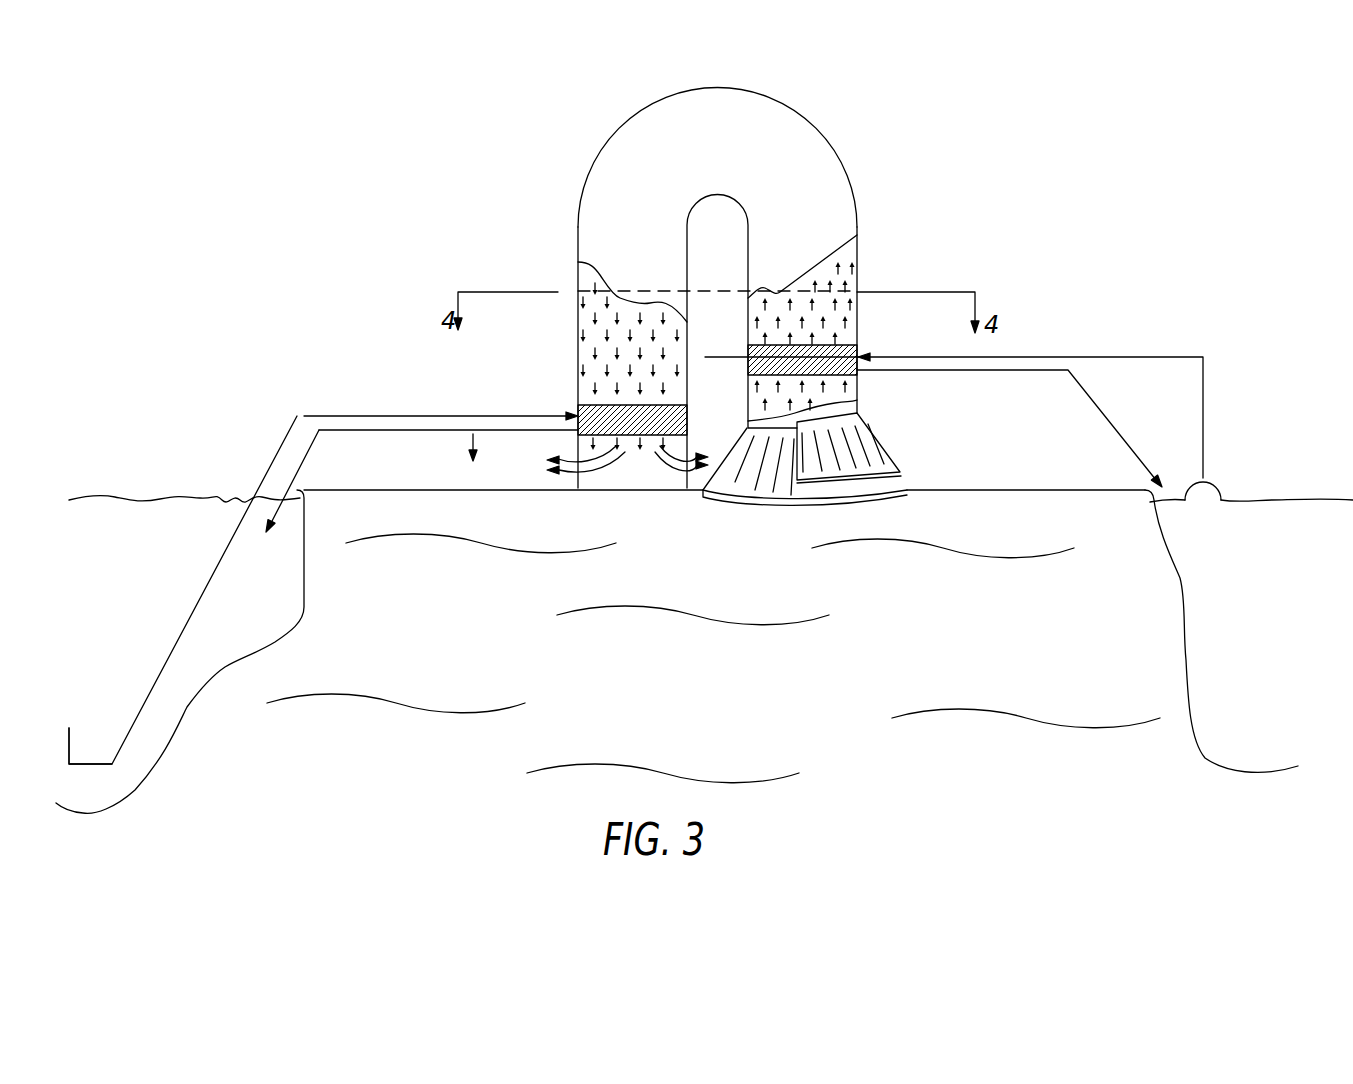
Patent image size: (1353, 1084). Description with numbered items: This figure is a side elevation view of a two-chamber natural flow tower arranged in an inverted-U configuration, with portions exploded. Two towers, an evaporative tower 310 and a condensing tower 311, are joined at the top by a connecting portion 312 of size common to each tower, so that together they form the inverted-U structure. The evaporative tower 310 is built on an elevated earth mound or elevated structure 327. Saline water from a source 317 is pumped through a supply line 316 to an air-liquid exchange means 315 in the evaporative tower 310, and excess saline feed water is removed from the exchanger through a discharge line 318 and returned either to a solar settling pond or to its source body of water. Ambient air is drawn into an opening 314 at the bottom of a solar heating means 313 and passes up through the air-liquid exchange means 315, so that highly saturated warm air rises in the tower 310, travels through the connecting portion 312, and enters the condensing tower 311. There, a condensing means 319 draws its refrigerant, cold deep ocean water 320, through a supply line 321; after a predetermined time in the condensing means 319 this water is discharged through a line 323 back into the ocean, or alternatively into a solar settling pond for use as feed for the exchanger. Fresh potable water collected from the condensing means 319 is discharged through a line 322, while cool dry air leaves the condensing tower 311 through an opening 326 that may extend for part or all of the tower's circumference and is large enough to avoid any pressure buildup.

The evaporative tower 310 is at (857, 217).
The condensing tower 311 is at (606, 143).
The connecting portion 312 is at (745, 88).
The solar heating means 313 is at (862, 452).
The opening 314 is at (890, 476).
The air-liquid exchange means 315 is at (856, 372).
The supply line 316 is at (1110, 357).
The source 317 is at (1272, 500).
The discharge line 318 is at (1100, 400).
The condensing means 319 is at (578, 410).
The cold deep ocean water 320 is at (97, 752).
The supply line 321 is at (383, 412).
The line 322 is at (473, 434).
The line 323 is at (308, 480).
The opening 326 is at (577, 472).
The elevated earth mound or elevated structure 327 is at (765, 487).